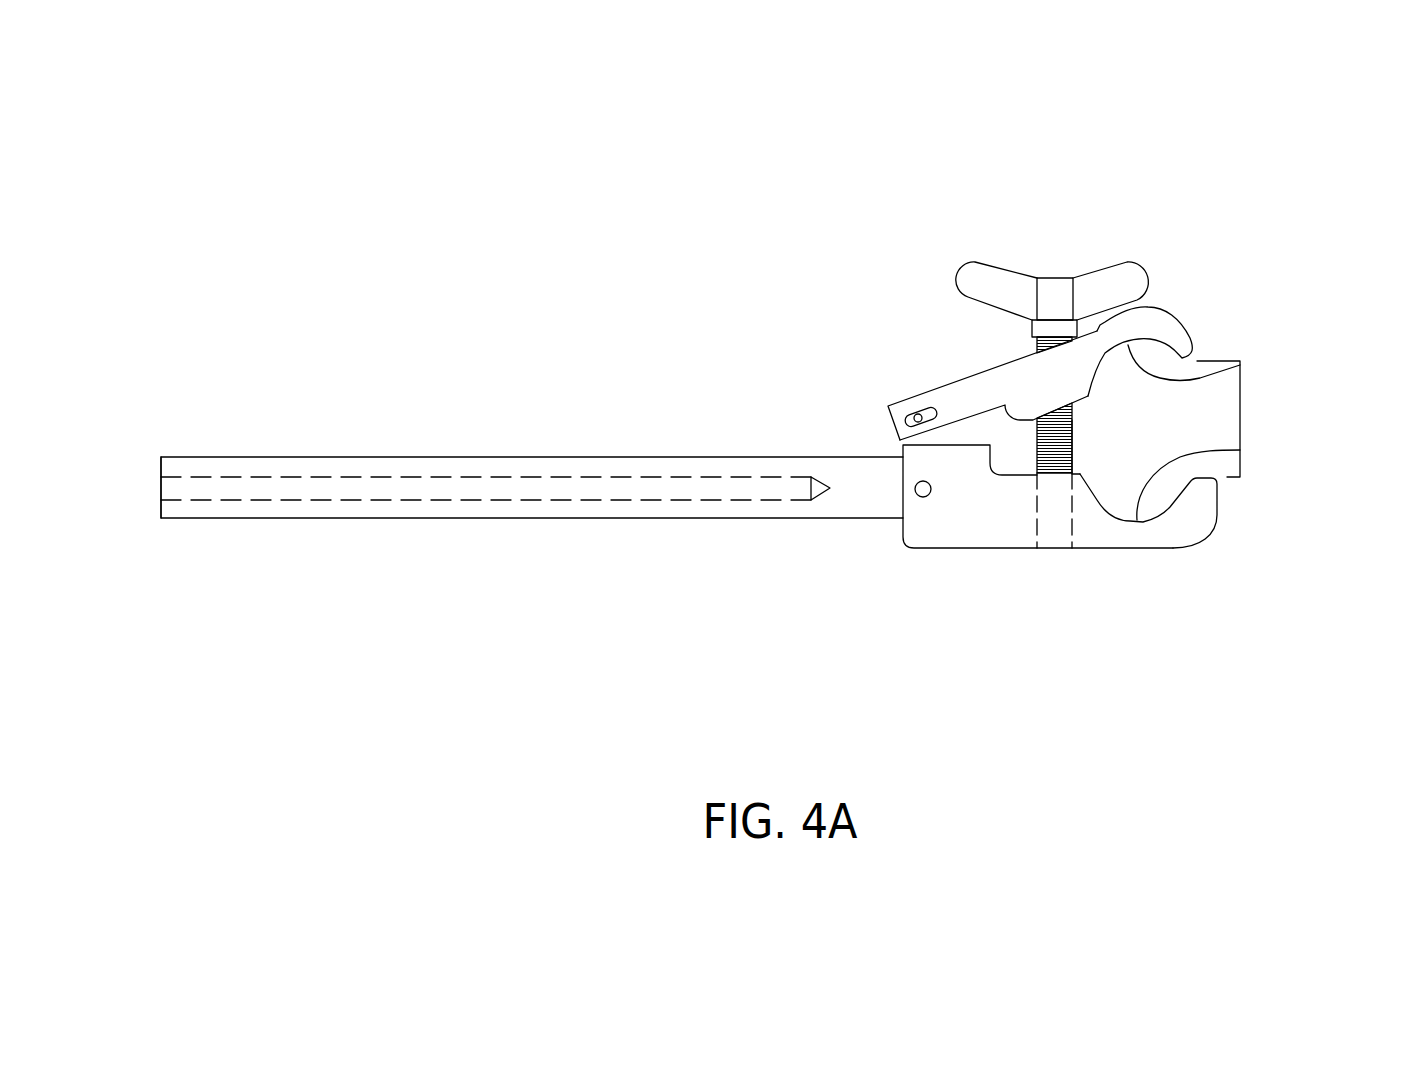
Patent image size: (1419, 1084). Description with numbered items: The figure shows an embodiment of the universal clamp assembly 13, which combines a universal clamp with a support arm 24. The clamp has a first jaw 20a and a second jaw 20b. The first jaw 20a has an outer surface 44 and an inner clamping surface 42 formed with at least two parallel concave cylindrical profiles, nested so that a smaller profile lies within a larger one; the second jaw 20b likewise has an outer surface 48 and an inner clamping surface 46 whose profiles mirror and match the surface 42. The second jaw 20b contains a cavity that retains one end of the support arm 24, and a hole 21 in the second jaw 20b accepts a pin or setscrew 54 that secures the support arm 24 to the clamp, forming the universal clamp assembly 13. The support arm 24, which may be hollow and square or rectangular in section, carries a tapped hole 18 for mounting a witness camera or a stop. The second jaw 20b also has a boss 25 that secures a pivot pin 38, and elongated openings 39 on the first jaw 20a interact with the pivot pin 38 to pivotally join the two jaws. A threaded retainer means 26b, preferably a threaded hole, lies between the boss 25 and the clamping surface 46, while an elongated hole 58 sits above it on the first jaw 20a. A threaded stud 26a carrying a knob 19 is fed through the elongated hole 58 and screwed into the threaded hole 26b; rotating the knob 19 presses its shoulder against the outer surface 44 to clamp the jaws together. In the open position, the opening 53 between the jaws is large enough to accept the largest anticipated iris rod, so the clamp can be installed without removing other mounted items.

The universal clamp assembly 13 is at (1072, 521).
The tapped hole 18 is at (158, 484).
The knob 19 is at (1057, 262).
The first jaw 20a is at (1209, 290).
The second jaw 20b is at (1237, 560).
The hole 21 is at (876, 595).
The support arm 24 is at (524, 520).
The boss 25 is at (973, 432).
The threaded retainer means (threaded stud) 26a is at (1080, 435).
The threaded retainer means (threaded hole) 26b is at (1061, 538).
The pivot pin 38 is at (969, 357).
The elongated openings 39 is at (920, 410).
The inner clamping surface 42 is at (1240, 365).
The outer surface 44 is at (1150, 306).
The inner clamping surface 46 is at (1240, 450).
The outer surface 48 is at (1168, 549).
The opening 53 is at (1240, 420).
The pin or setscrew 54 is at (915, 489).
The elongated hole 58 is at (1098, 448).